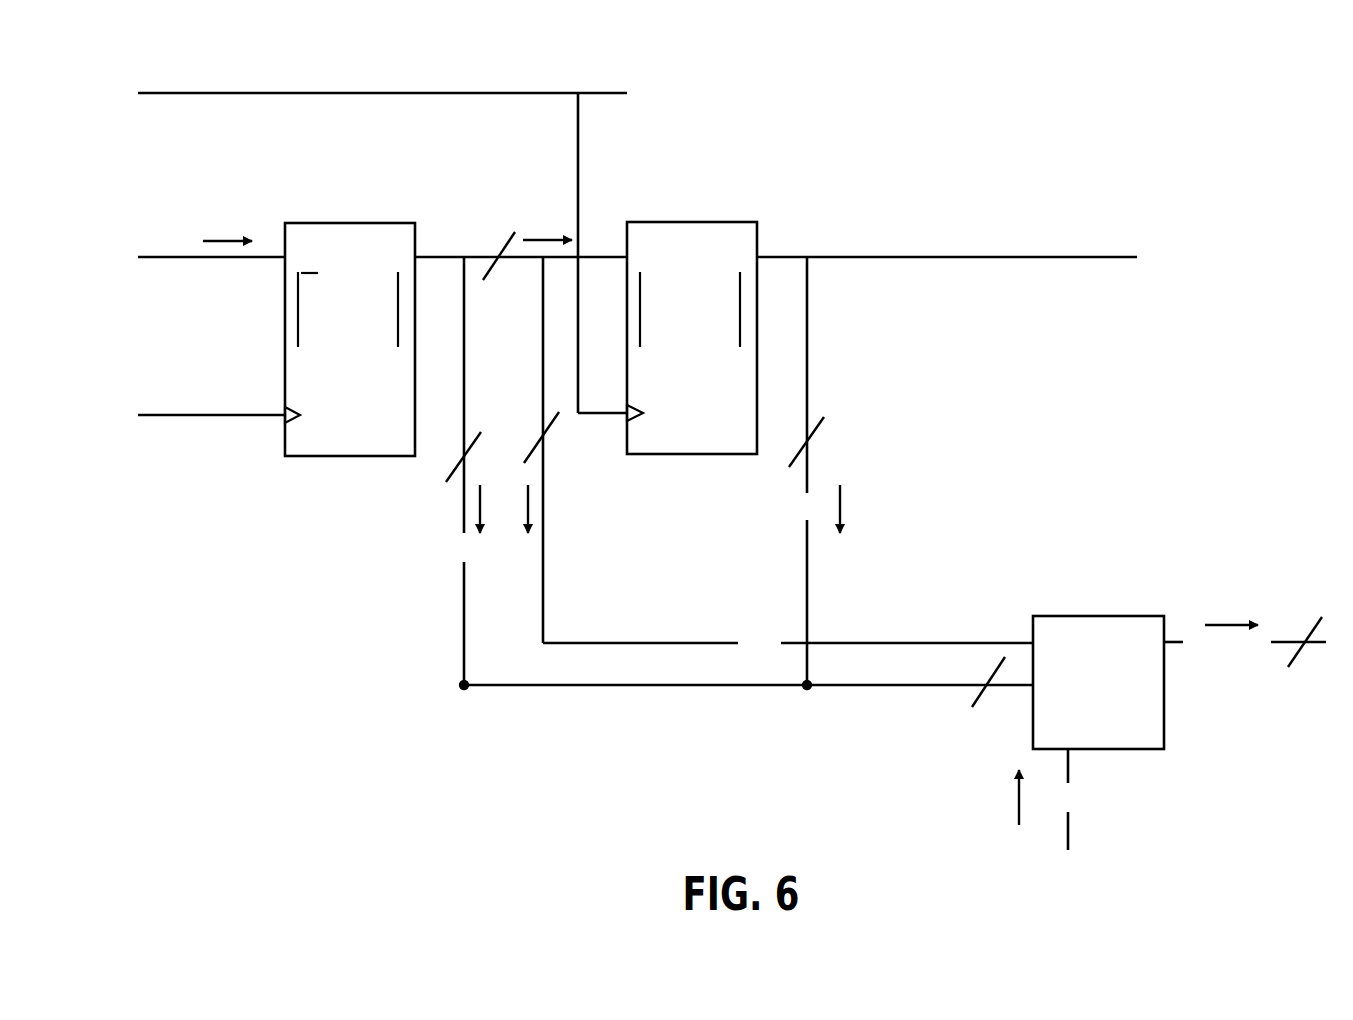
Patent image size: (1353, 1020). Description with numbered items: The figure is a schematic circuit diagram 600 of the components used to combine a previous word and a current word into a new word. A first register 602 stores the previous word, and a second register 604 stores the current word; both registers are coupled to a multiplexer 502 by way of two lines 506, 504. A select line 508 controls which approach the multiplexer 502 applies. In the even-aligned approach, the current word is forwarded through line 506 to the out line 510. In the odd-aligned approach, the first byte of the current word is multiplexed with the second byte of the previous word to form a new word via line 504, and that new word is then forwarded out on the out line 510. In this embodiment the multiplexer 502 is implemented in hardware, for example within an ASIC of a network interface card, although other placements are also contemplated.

The schematic circuit diagram 600 is at (732, 466).
The first register 602 is at (690, 454).
The second register 604 is at (328, 456).
The multiplexer 502 is at (1160, 612).
The line 504 is at (872, 686).
The line 506 is at (943, 641).
The select line 508 is at (1067, 813).
The out line 510 is at (1290, 641).